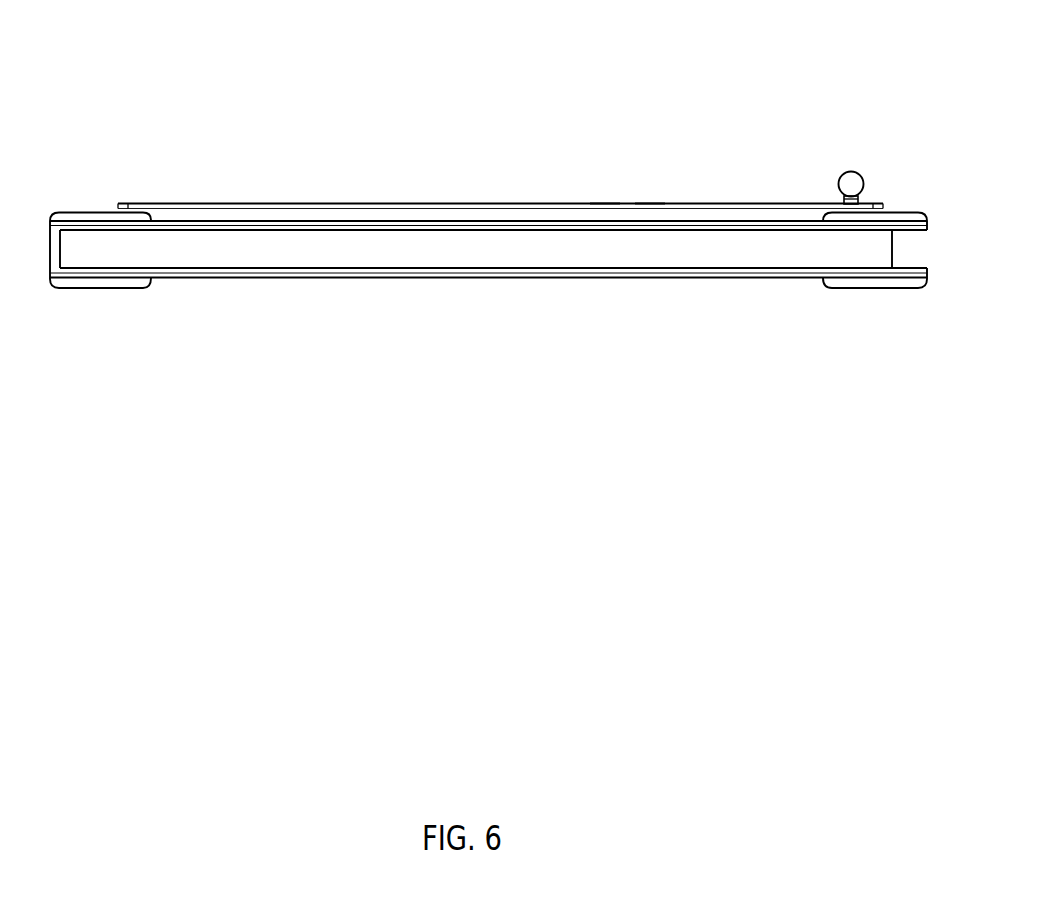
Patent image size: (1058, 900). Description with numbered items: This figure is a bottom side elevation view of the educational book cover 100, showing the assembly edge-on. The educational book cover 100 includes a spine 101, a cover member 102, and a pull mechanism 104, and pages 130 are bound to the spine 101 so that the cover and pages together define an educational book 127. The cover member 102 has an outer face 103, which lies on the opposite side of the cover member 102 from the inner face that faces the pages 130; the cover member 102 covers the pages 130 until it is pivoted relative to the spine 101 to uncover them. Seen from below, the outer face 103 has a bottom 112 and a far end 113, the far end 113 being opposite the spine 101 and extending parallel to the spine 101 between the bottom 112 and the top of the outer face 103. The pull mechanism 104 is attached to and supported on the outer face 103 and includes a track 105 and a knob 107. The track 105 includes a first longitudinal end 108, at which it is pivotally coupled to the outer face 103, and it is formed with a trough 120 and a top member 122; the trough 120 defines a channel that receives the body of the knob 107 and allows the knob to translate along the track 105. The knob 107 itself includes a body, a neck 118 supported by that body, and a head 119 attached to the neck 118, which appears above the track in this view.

The educational book cover 100 is at (488, 163).
The spine 101 is at (50, 251).
The cover member 102 is at (501, 209).
The outer face 103 is at (487, 220).
The pull mechanism 104 is at (686, 173).
The track 105 is at (491, 167).
The knob 107 is at (866, 167).
The first longitudinal end 108 is at (117, 209).
The bottom 112 is at (81, 228).
The far end 113 is at (926, 219).
The neck 118 is at (843, 200).
The head 119 is at (852, 173).
The trough 120 is at (603, 209).
The top member 122 is at (647, 207).
The educational book 127 is at (852, 149).
The pages 130 is at (893, 247).